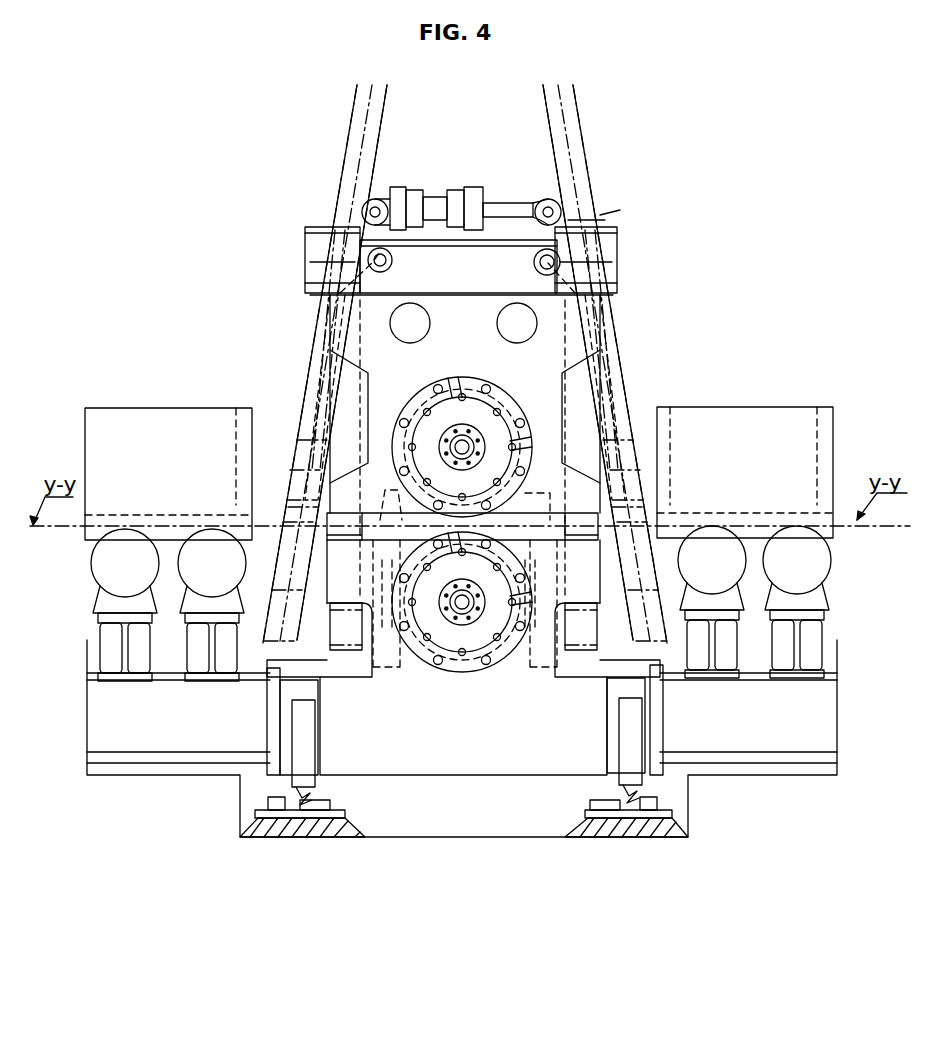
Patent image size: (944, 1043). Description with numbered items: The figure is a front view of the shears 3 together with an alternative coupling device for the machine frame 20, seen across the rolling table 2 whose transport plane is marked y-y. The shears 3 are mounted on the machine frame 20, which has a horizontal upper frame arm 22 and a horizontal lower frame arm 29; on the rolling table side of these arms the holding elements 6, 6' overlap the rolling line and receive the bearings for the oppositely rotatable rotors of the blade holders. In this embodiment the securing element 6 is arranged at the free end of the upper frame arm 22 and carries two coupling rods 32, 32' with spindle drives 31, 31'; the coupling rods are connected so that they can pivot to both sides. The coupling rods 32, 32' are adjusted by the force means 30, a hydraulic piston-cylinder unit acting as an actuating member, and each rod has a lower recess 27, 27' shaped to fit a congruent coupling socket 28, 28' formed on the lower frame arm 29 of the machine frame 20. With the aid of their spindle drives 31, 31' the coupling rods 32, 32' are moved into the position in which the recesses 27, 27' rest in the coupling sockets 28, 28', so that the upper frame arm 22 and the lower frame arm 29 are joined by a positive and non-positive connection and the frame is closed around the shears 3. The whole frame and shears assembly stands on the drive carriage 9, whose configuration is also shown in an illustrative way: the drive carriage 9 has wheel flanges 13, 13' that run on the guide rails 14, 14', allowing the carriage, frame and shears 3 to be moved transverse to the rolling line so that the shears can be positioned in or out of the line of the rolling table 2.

The rolling table 2 is at (203, 553).
The shears 3 is at (640, 300).
The holding element 6 is at (462, 421).
The holding element 6' is at (468, 622).
The drive carriage 9 is at (412, 730).
The wheel flange 13 is at (255, 739).
The wheel flange 13' is at (664, 736).
The guide rail 14 is at (302, 839).
The guide rail 14' is at (626, 840).
The machine frame 20 is at (305, 247).
The upper frame arm 22 is at (449, 280).
The lower recess 27 is at (320, 364).
The lower recess 27' is at (632, 364).
The coupling socket 28 is at (319, 633).
The coupling socket 28' is at (607, 627).
The lower frame arm 29 is at (452, 752).
The force means 30 is at (478, 186).
The spindle drive 31 is at (347, 224).
The spindle drive 31' is at (600, 254).
The coupling rod 32 is at (287, 397).
The coupling rod 32' is at (640, 397).